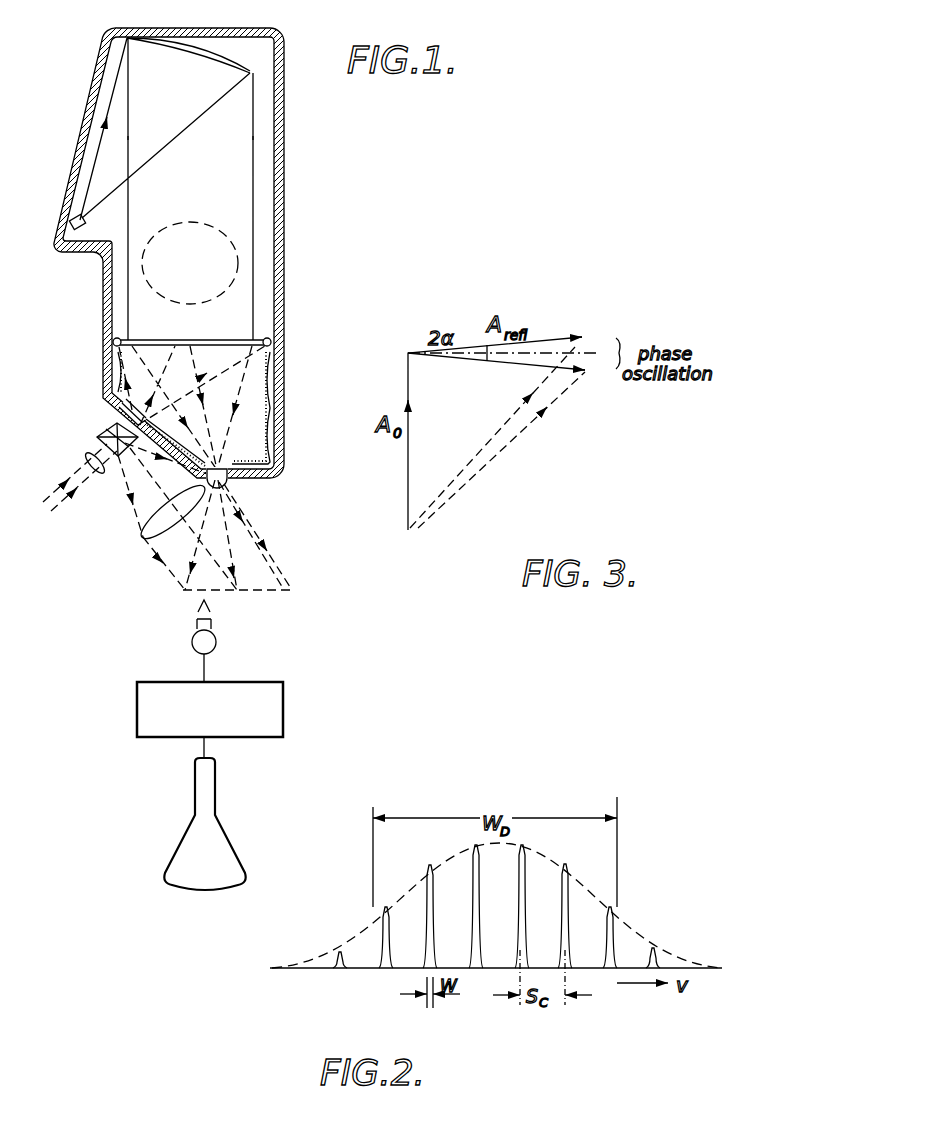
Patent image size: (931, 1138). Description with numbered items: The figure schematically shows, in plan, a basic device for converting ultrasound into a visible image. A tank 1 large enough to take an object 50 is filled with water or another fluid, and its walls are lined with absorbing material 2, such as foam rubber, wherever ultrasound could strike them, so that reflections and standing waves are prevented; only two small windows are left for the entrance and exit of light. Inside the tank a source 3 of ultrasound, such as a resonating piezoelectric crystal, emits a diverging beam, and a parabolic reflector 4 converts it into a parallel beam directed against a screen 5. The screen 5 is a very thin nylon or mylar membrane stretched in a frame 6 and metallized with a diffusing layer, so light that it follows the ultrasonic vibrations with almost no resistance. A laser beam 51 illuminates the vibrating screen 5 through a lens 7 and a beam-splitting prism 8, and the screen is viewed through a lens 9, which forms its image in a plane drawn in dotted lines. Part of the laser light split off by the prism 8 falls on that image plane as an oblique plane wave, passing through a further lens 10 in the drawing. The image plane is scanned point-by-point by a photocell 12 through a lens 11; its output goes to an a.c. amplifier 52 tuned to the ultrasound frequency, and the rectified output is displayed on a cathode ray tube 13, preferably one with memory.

The tank 1 is at (282, 57).
The absorbing material 2 is at (283, 376).
The source of ultrasound 3 is at (77, 233).
The parabolic reflector 4 is at (232, 47).
The screen 5 is at (262, 340).
The frame 6 is at (272, 342).
The lens 7 is at (87, 460).
The beam-splitting prism 8 is at (100, 430).
The lens 9 is at (226, 482).
The lens 10 is at (143, 540).
The lens 11 is at (211, 623).
The photocell 12 is at (214, 648).
The cathode ray tube 13 is at (194, 796).
The object 50 is at (201, 226).
The laser beam 51 is at (61, 493).
The a.c. amplifier 52 is at (137, 689).